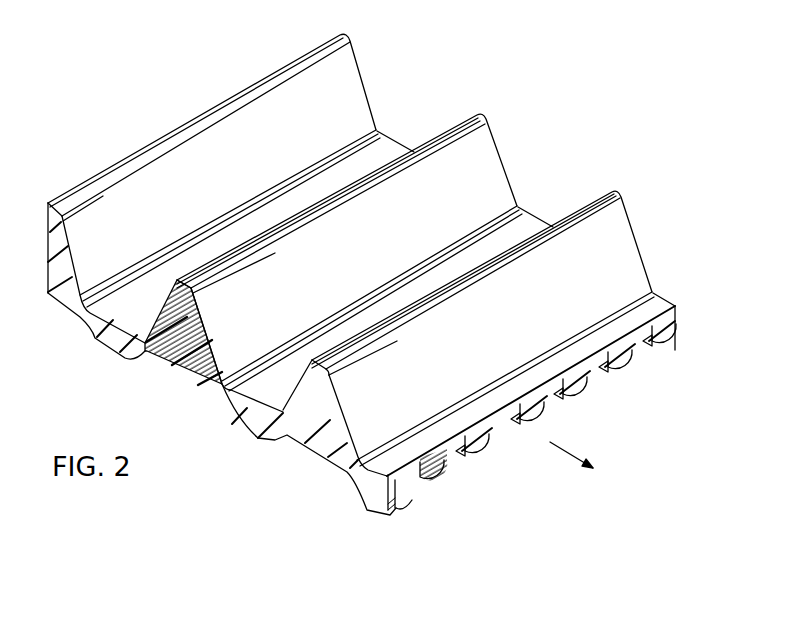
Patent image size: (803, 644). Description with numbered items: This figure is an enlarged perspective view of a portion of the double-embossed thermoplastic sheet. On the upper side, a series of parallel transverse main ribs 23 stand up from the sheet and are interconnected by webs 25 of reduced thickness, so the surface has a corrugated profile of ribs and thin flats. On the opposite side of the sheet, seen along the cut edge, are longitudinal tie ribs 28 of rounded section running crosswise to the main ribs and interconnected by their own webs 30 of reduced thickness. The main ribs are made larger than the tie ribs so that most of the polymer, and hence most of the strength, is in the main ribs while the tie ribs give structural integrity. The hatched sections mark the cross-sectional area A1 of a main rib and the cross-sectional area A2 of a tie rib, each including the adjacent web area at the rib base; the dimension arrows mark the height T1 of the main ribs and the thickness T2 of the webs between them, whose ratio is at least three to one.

The transverse main ribs 23 is at (487, 133).
The webs 25 is at (383, 143).
The longitudinal tie ribs 28 is at (630, 365).
The webs 30 is at (598, 372).
The cross-sectional area of the main ribs A1 is at (178, 355).
The cross-sectional area of the tie ribs A2 is at (442, 483).
The height of the main ribs T1 is at (257, 327).
The thickness of the webs T2 is at (508, 384).